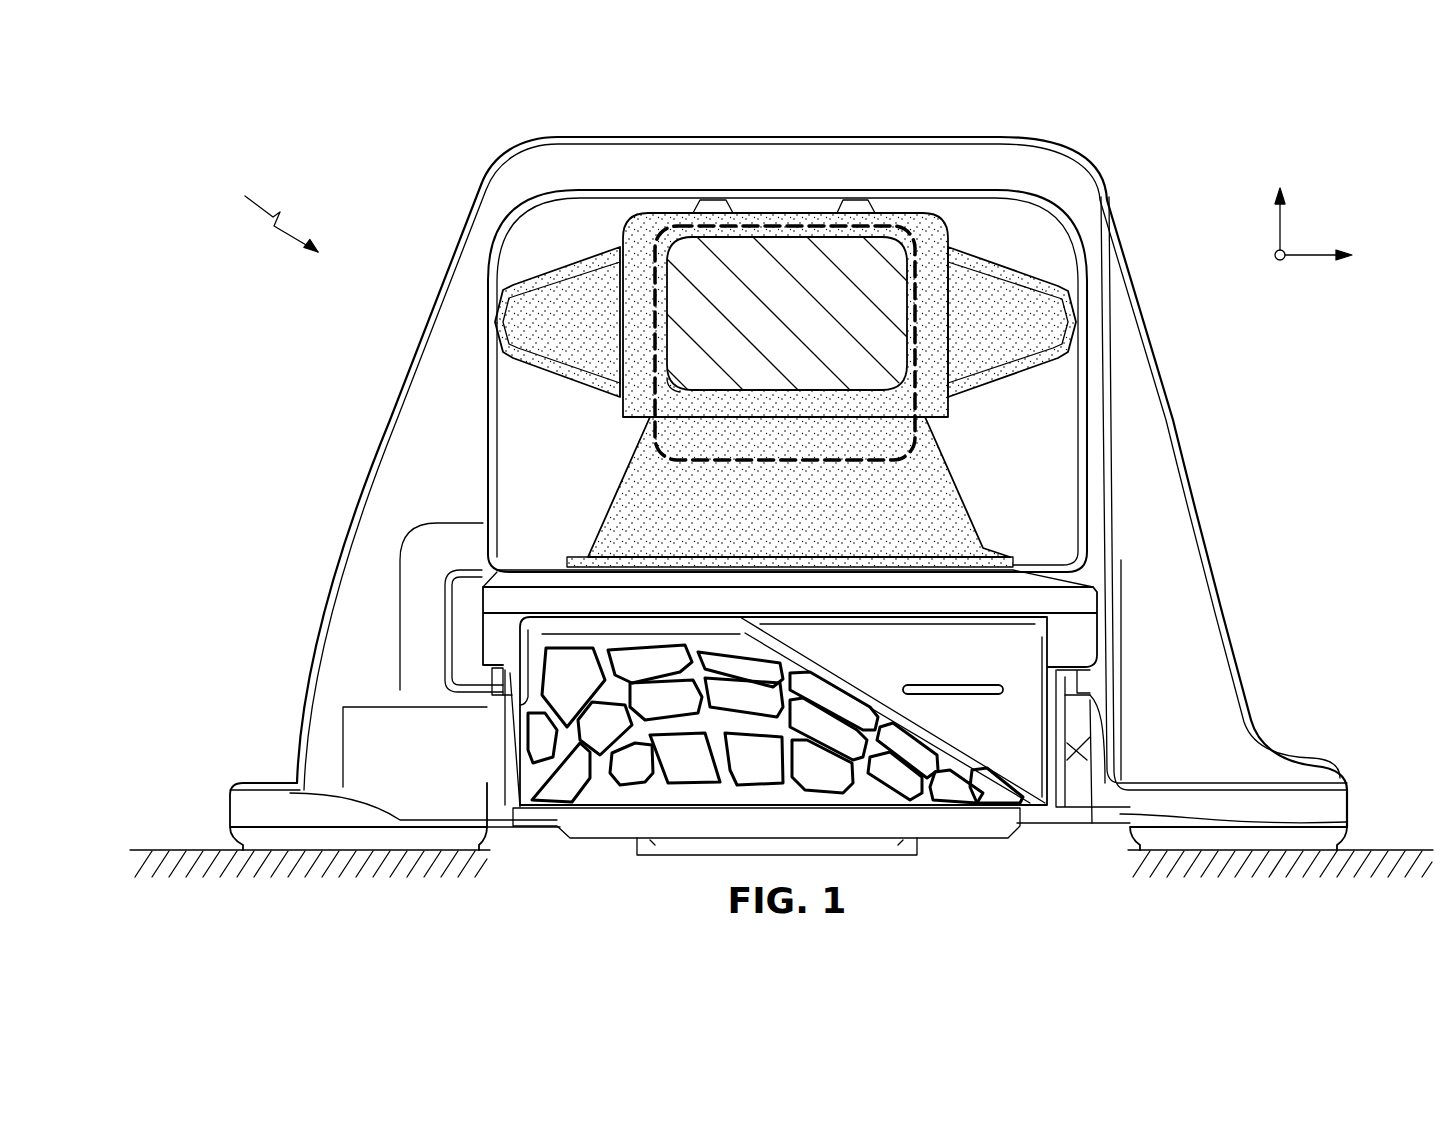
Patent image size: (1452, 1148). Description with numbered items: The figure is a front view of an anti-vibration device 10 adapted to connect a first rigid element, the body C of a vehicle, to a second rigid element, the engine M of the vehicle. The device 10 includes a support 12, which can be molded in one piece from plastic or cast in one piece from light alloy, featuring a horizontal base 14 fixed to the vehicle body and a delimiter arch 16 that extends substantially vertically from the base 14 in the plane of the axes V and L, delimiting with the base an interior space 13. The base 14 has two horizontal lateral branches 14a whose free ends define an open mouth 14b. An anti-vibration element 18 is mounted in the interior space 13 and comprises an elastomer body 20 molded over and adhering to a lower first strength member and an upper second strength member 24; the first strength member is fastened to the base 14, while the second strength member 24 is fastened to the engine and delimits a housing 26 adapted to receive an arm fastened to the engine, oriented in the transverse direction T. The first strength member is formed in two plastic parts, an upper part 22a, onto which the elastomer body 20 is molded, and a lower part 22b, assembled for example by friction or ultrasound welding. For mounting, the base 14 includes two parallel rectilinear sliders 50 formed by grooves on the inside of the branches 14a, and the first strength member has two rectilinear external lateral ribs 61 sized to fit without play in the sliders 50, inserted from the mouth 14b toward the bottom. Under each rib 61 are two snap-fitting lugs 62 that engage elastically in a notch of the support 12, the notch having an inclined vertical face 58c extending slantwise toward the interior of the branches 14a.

The anti-vibration device 10 is at (432, 186).
The support 12 is at (1277, 735).
The interior space 13 is at (1008, 242).
The horizontal base 14 is at (1338, 807).
The horizontal lateral branches 14a is at (465, 672).
The open mouth 14b is at (1107, 688).
The delimiter arch 16 is at (1098, 512).
The anti-vibration element 18 is at (952, 443).
The elastomer body 20 is at (955, 515).
The upper part of first strength member 22a is at (1015, 603).
The lower part of first strength member 22b is at (995, 668).
The second strength member 24 is at (648, 390).
The housing 26 is at (688, 394).
The sliders 50 is at (480, 635).
The inclined vertical face 58c is at (502, 667).
The external lateral ribs 61 is at (490, 656).
The snap-fitting lugs 62 is at (503, 670).
The engine M is at (798, 262).
The body C is at (166, 850).